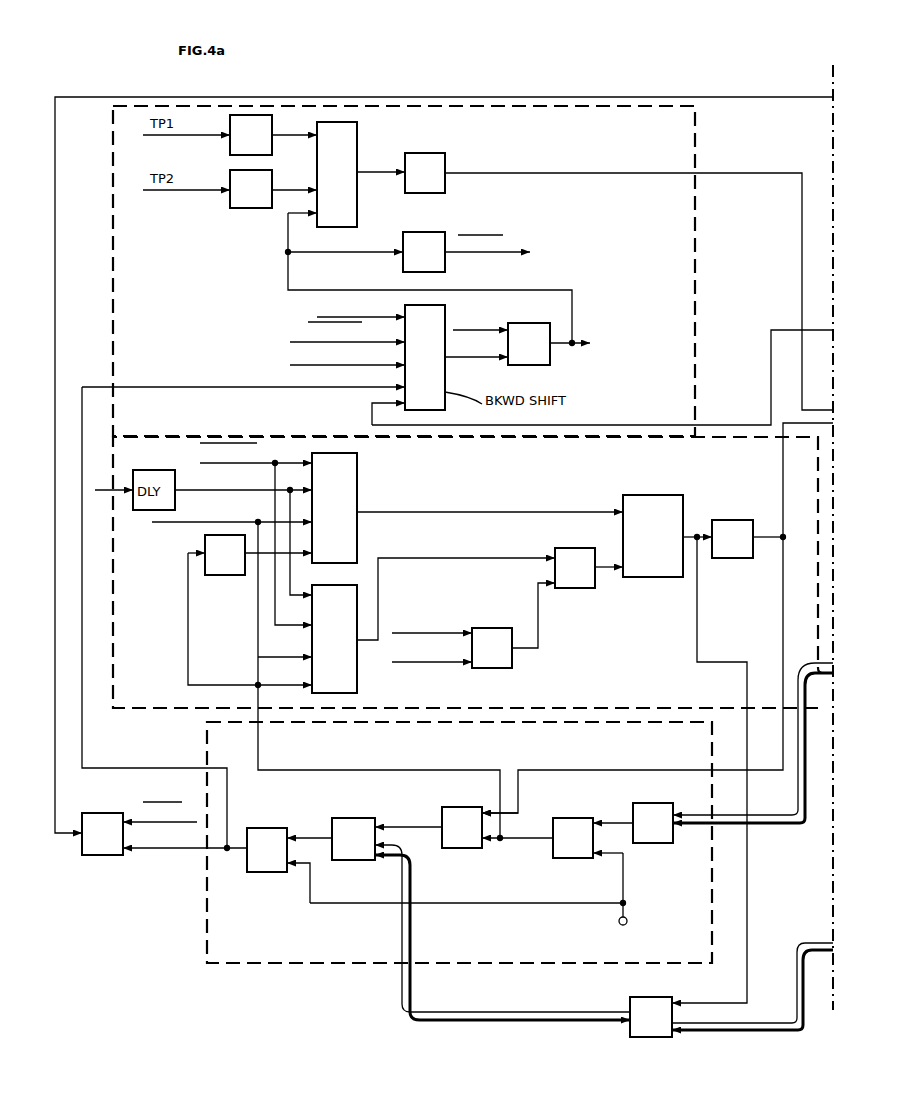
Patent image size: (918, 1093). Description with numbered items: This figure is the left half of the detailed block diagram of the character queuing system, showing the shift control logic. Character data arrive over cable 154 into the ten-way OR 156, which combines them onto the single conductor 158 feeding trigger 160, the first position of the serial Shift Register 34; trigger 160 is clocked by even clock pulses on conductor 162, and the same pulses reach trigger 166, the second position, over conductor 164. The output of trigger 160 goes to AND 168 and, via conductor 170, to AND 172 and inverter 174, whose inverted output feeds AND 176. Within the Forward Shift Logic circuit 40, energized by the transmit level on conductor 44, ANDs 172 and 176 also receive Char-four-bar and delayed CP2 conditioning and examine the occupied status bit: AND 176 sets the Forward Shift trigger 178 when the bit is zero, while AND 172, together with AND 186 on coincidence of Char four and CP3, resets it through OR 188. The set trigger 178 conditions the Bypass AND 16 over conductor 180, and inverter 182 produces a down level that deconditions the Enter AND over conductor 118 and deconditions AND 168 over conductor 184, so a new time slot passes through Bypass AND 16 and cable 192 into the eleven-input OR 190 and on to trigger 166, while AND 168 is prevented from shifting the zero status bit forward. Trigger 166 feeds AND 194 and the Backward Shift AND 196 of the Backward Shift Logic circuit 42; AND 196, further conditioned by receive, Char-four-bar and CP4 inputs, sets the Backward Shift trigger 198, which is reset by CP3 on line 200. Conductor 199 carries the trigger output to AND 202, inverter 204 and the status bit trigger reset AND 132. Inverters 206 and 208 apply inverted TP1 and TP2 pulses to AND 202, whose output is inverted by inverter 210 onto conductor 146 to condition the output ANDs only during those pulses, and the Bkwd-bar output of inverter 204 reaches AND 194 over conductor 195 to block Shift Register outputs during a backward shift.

The bypass gate 16 is at (640, 1038).
The serial Shift Register 34 is at (340, 968).
The Forward Shift Logic circuit 40 is at (113, 590).
The Backward Shift Logic circuit 42 is at (698, 158).
The conductor 44 is at (172, 527).
The conductor 118 is at (783, 457).
The status bit trigger reset AND 132 is at (604, 343).
The conductor 146 is at (641, 173).
The cable 154 is at (770, 828).
The 10-way OR 156 is at (653, 844).
The conductor 158 is at (614, 822).
The trigger 160 is at (568, 818).
The conductor 162 is at (623, 873).
The conductor 164 is at (356, 905).
The trigger 166 is at (267, 828).
The AND 168 is at (457, 807).
The conductor 170 is at (187, 654).
The AND 172 is at (358, 668).
The inverter 174 is at (233, 577).
The AND 176 is at (358, 493).
The Forward Shift trigger 178 is at (683, 513).
The conductor 180 is at (747, 878).
The inverter 182 is at (742, 560).
The conductor 184 is at (783, 596).
The AND 186 is at (495, 669).
The OR 188 is at (580, 590).
The 11 input OR 190 is at (351, 818).
The cable 192 is at (412, 918).
The AND 194 is at (97, 813).
The conductor 195 is at (147, 821).
The Backward Shift AND 196 is at (438, 368).
The Backward Shift trigger 198 is at (528, 323).
The conductor 199 is at (288, 266).
The line 200 is at (490, 331).
The AND 202 is at (358, 140).
The inverter 204 is at (428, 232).
The inverter 206 is at (228, 145).
The inverter 208 is at (245, 209).
The inverter 210 is at (443, 153).